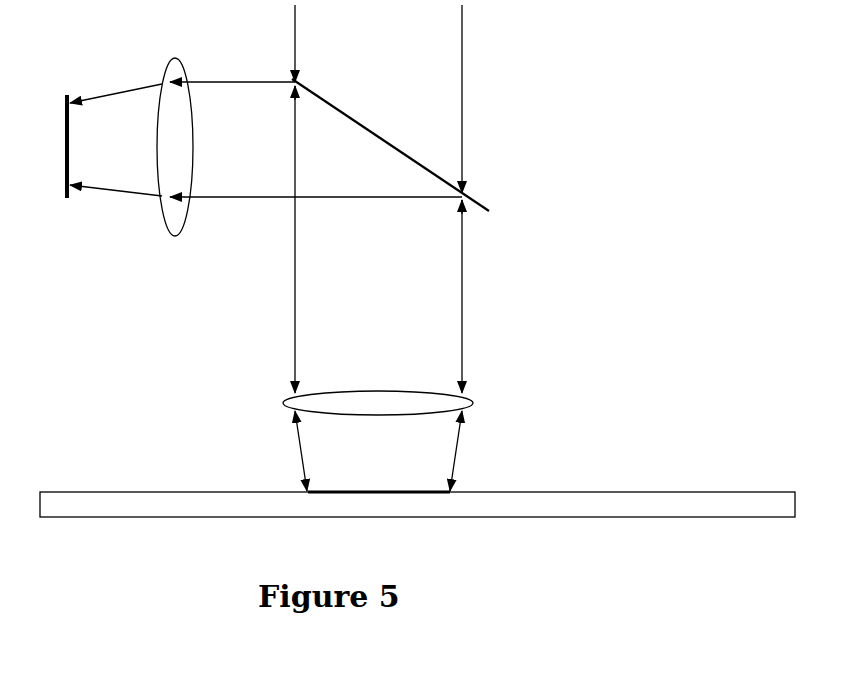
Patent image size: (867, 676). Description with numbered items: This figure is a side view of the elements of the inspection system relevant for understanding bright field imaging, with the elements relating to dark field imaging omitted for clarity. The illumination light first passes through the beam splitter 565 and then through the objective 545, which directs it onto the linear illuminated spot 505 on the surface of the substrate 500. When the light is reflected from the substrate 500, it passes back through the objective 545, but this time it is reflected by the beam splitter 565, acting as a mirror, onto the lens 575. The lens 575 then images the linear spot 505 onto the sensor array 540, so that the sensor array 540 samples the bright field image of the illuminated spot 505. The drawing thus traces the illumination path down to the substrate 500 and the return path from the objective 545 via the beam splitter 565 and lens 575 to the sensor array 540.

The substrate 500 is at (603, 492).
The illuminated spot 505 is at (385, 491).
The sensor array 540 is at (68, 198).
The objective 545 is at (385, 403).
The beam splitter 565 is at (335, 108).
The lens 575 is at (168, 56).